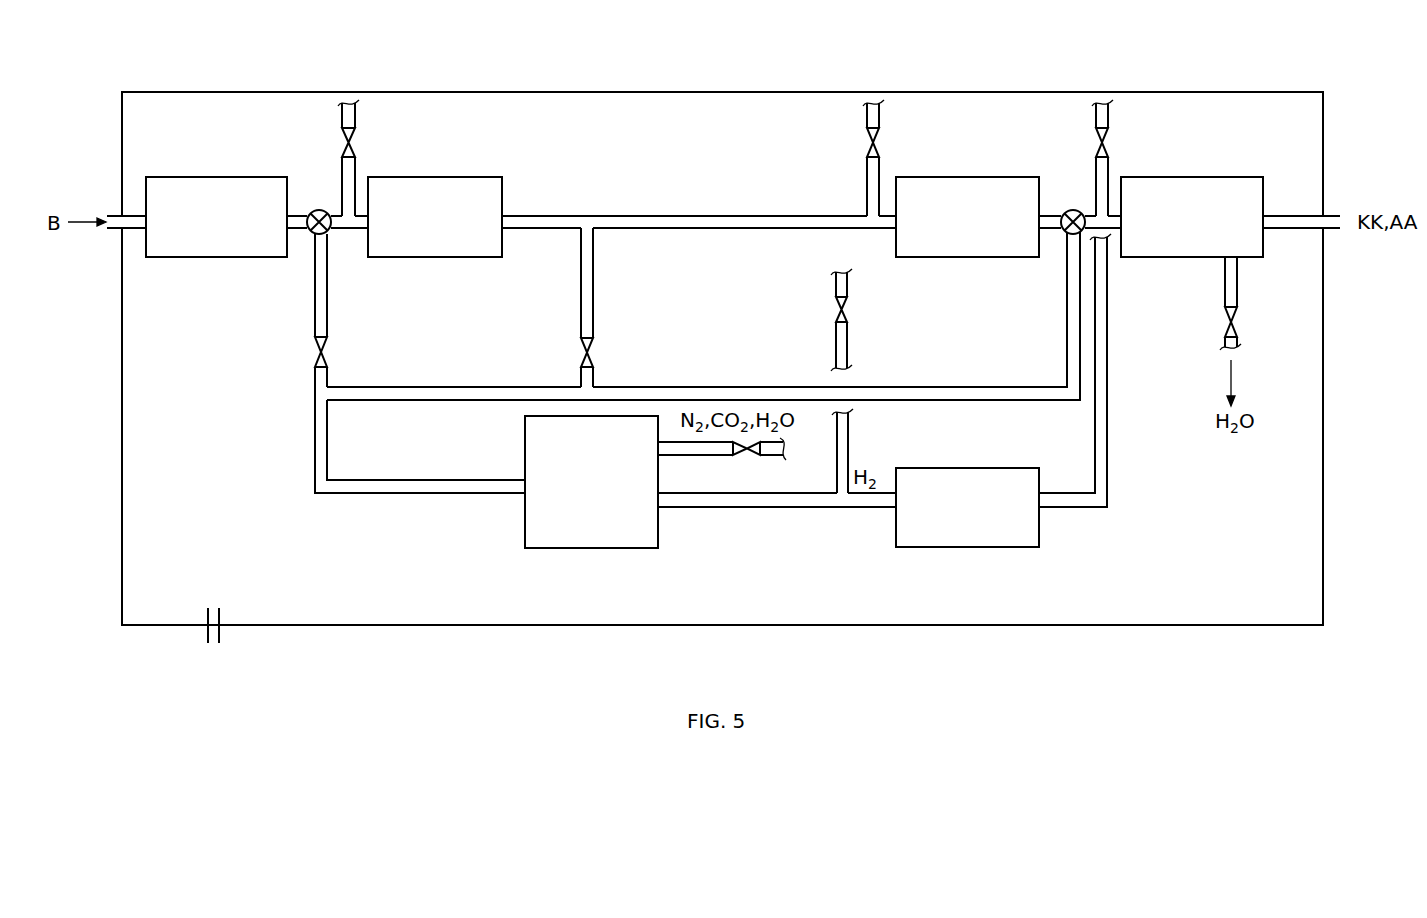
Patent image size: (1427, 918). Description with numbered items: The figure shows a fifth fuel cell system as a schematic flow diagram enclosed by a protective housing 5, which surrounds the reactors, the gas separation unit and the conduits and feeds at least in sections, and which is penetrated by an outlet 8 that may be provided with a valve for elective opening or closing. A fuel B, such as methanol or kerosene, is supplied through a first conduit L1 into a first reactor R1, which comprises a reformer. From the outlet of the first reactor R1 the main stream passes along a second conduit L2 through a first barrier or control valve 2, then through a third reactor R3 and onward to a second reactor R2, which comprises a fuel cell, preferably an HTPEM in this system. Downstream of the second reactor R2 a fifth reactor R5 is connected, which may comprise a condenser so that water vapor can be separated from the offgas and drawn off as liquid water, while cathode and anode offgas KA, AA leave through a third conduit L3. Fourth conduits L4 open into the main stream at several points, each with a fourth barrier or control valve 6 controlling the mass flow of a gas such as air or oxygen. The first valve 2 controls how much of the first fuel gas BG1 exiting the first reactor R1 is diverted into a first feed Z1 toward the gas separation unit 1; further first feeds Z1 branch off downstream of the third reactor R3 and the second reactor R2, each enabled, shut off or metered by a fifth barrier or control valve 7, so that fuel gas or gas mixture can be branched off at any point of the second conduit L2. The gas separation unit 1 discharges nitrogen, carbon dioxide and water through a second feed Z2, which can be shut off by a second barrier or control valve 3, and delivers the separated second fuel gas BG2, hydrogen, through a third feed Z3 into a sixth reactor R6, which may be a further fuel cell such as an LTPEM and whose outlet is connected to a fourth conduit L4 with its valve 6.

The gas separation unit 1 is at (591, 482).
The first barrier or control valve 2 is at (312, 210).
The second barrier or control valve 3 is at (742, 455).
The protective housing 5 is at (1187, 625).
The fourth barrier or control valve 6 is at (1112, 152).
The fifth barrier or control valve 7 is at (316, 352).
The outlet 8 is at (220, 612).
The first reactor R1 is at (222, 192).
The second reactor R2 is at (985, 190).
The third reactor R3 is at (470, 185).
The fifth reactor R5 is at (1238, 190).
The sixth reactor R6 is at (955, 533).
The first conduit L1 is at (128, 230).
The second conduit L2 is at (698, 213).
The third conduit L3 is at (1327, 213).
The fourth conduit L4 is at (355, 170).
The first feed Z1 is at (313, 438).
The second feed Z2 is at (677, 440).
The third feed Z3 is at (797, 505).
The first fuel gas BG1 is at (345, 229).
The second fuel gas BG2 is at (865, 505).